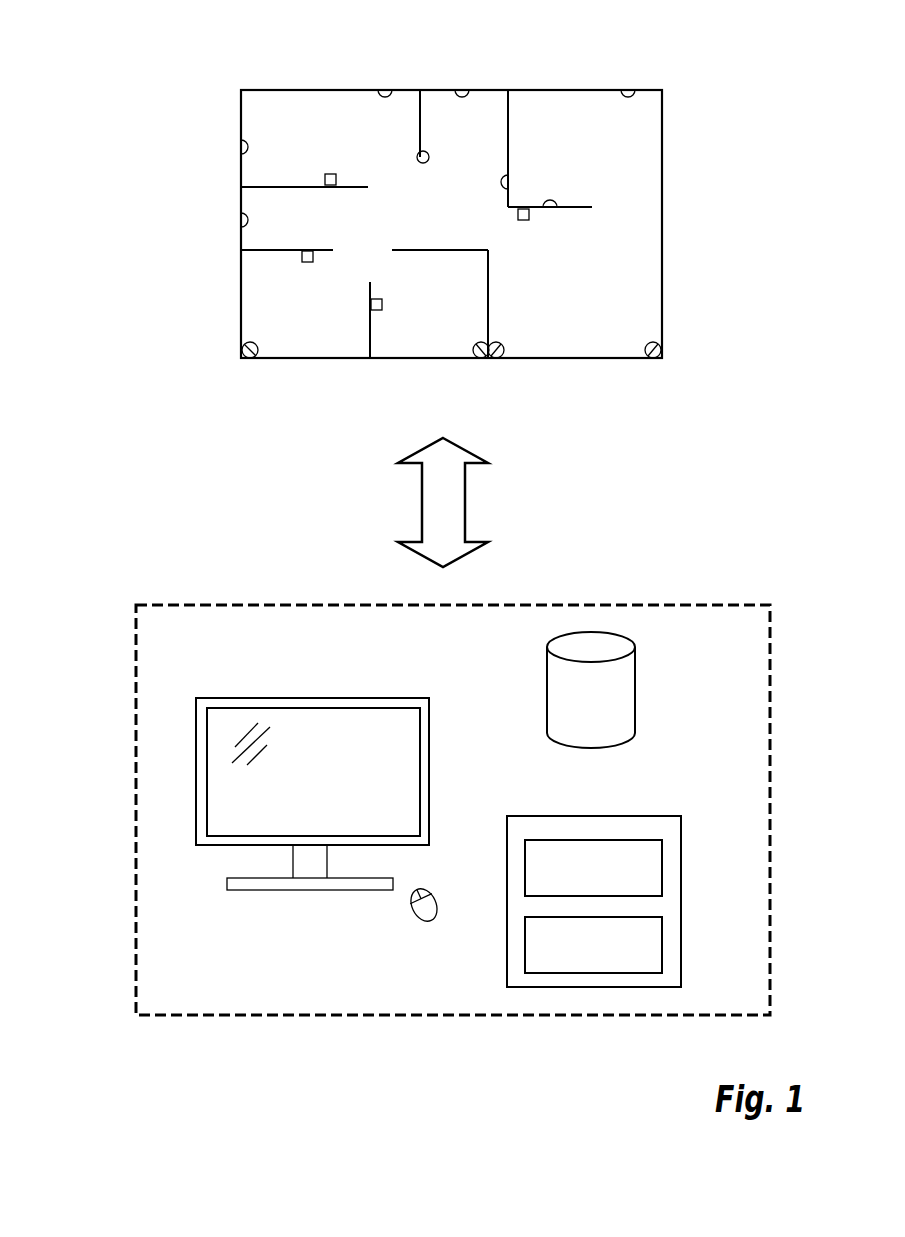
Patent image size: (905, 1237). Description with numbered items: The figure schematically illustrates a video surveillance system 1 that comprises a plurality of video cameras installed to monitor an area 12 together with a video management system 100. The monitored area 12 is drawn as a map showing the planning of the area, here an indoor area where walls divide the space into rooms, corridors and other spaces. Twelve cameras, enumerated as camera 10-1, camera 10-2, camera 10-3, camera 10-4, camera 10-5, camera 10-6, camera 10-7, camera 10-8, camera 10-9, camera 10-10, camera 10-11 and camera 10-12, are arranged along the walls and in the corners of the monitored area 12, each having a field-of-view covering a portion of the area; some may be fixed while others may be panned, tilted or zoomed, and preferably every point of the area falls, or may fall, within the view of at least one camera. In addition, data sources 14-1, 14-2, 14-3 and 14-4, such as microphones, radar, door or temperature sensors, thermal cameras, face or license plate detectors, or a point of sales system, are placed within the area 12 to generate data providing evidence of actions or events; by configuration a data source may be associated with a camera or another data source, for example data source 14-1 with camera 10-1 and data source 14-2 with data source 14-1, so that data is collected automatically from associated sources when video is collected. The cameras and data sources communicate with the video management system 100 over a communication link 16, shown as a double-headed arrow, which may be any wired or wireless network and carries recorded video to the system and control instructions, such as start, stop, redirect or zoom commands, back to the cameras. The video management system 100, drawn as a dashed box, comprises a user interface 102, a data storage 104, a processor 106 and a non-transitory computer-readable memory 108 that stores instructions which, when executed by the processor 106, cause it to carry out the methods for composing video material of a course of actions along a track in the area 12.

The video surveillance system 1 is at (118, 366).
The monitored area 12 is at (296, 90).
The video camera 10-1 is at (240, 147).
The video camera 10-2 is at (384, 90).
The video camera 10-3 is at (460, 90).
The video camera 10-4 is at (418, 157).
The video camera 10-5 is at (500, 182).
The video camera 10-6 is at (554, 206).
The video camera 10-7 is at (625, 90).
The video camera 10-8 is at (240, 220).
The video camera 10-9 is at (243, 350).
The video camera 10-10 is at (474, 350).
The video camera 10-11 is at (504, 350).
The video camera 10-12 is at (647, 350).
The data source 14-1 is at (325, 180).
The data source 14-2 is at (302, 256).
The data source 14-3 is at (371, 304).
The data source 14-4 is at (530, 221).
The communication link 16 is at (422, 512).
The video management system 100 is at (215, 605).
The user interface 102 is at (305, 717).
The data storage 104 is at (555, 718).
The processor 106 is at (593, 868).
The computer-readable memory 108 is at (593, 945).